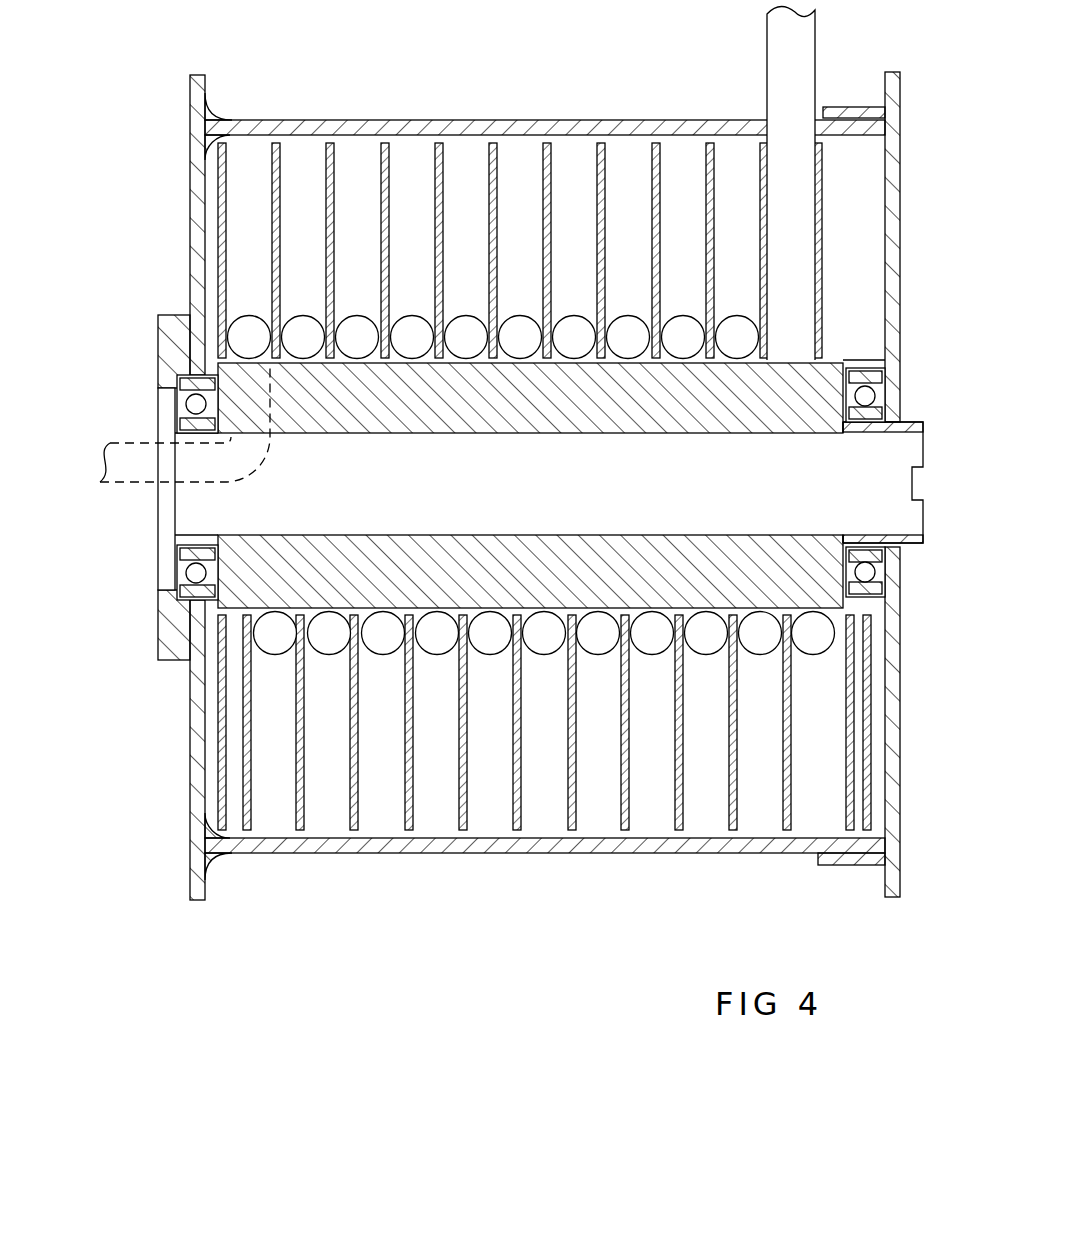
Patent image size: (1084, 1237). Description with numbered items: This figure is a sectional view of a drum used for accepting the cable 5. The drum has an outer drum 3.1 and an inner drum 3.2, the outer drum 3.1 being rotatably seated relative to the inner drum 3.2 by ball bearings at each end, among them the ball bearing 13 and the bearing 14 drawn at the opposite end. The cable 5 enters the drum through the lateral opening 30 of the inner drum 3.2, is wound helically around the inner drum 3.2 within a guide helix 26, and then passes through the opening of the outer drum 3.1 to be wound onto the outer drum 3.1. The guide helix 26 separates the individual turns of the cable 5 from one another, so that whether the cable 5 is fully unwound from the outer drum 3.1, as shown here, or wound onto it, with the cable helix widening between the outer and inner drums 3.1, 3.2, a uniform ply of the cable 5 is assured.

The outer drum 3.1 is at (195, 205).
The inner drum 3.2 is at (800, 582).
The cable 5 is at (780, 45).
The ball bearing 13 is at (200, 380).
The bearing 14 is at (880, 378).
The guide helix 26 is at (305, 793).
The lateral opening 30 is at (200, 517).